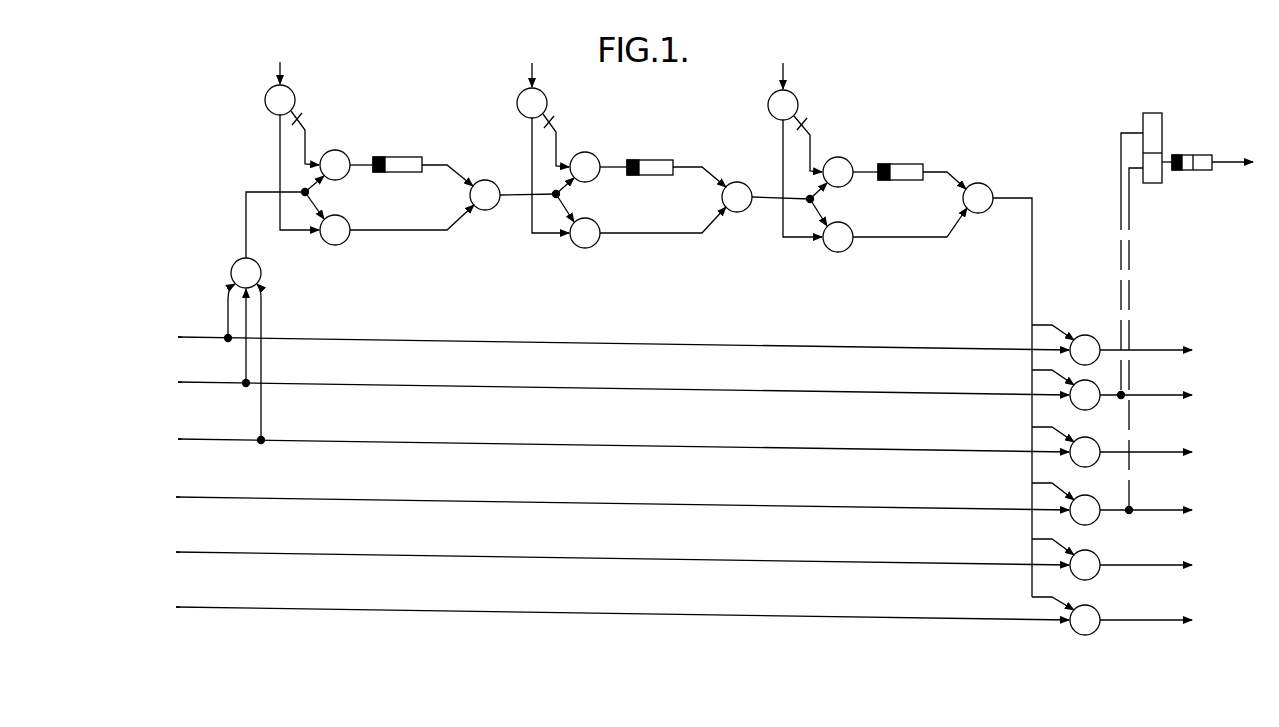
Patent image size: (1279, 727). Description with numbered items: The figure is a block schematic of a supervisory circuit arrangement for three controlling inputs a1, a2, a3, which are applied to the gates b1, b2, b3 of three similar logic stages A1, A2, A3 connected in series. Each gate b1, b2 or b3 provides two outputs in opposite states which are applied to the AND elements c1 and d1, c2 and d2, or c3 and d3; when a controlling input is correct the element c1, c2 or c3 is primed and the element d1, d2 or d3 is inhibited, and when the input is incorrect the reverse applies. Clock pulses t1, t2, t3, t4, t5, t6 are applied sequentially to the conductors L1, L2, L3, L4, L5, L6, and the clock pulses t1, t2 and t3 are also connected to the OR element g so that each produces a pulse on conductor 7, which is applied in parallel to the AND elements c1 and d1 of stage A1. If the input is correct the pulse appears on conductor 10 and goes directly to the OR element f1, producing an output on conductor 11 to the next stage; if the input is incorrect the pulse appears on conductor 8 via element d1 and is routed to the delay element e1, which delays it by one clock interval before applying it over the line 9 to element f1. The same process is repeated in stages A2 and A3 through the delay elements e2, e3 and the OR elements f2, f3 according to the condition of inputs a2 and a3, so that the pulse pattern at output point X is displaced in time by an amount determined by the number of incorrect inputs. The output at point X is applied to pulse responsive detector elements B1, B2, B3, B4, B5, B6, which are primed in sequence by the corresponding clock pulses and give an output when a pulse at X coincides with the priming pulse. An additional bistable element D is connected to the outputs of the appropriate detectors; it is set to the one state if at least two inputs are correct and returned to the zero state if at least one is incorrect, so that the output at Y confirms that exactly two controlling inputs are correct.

The controlling input a1 is at (296, 71).
The controlling input a2 is at (551, 75).
The controlling input a3 is at (801, 78).
The gate b1 is at (261, 100).
The gate b2 is at (516, 106).
The gate b3 is at (767, 111).
The AND element c1 is at (321, 240).
The AND element c2 is at (566, 244).
The AND element c3 is at (819, 248).
The AND element d1 is at (332, 151).
The AND element d2 is at (582, 150).
The AND element d3 is at (837, 154).
The delay element e1 is at (407, 140).
The delay element e2 is at (657, 142).
The delay element e3 is at (915, 146).
The OR element f1 is at (485, 180).
The OR element f2 is at (737, 183).
The OR element f3 is at (979, 183).
The OR element g is at (262, 272).
The conductor 7 is at (245, 223).
The conductor 8 is at (361, 178).
The line from delay e1 to OR gate f1 9 is at (447, 178).
The conductor 10 is at (355, 229).
The conductor 11 is at (528, 185).
The logic stage A1 is at (391, 167).
The logic stage A2 is at (648, 171).
The logic stage A3 is at (866, 174).
The pulse responsive detector element B1 is at (1107, 343).
The pulse responsive detector element B2 is at (1108, 392).
The pulse responsive detector element B3 is at (1108, 450).
The pulse responsive detector element B4 is at (1110, 508).
The pulse responsive detector element B5 is at (1115, 564).
The pulse responsive detector element B6 is at (1117, 619).
The conductor L1 is at (623, 329).
The conductor L2 is at (623, 377).
The conductor L3 is at (623, 433).
The conductor L4 is at (622, 490).
The conductor L5 is at (622, 544).
The conductor L6 is at (622, 599).
The clock pulse t1 is at (170, 341).
The clock pulse t2 is at (168, 386).
The clock pulse t3 is at (168, 442).
The clock pulse t4 is at (166, 499).
The clock pulse t5 is at (166, 552).
The clock pulse t6 is at (165, 608).
The bistable element D is at (1152, 135).
The output point X is at (1033, 397).
The output Y is at (1207, 153).